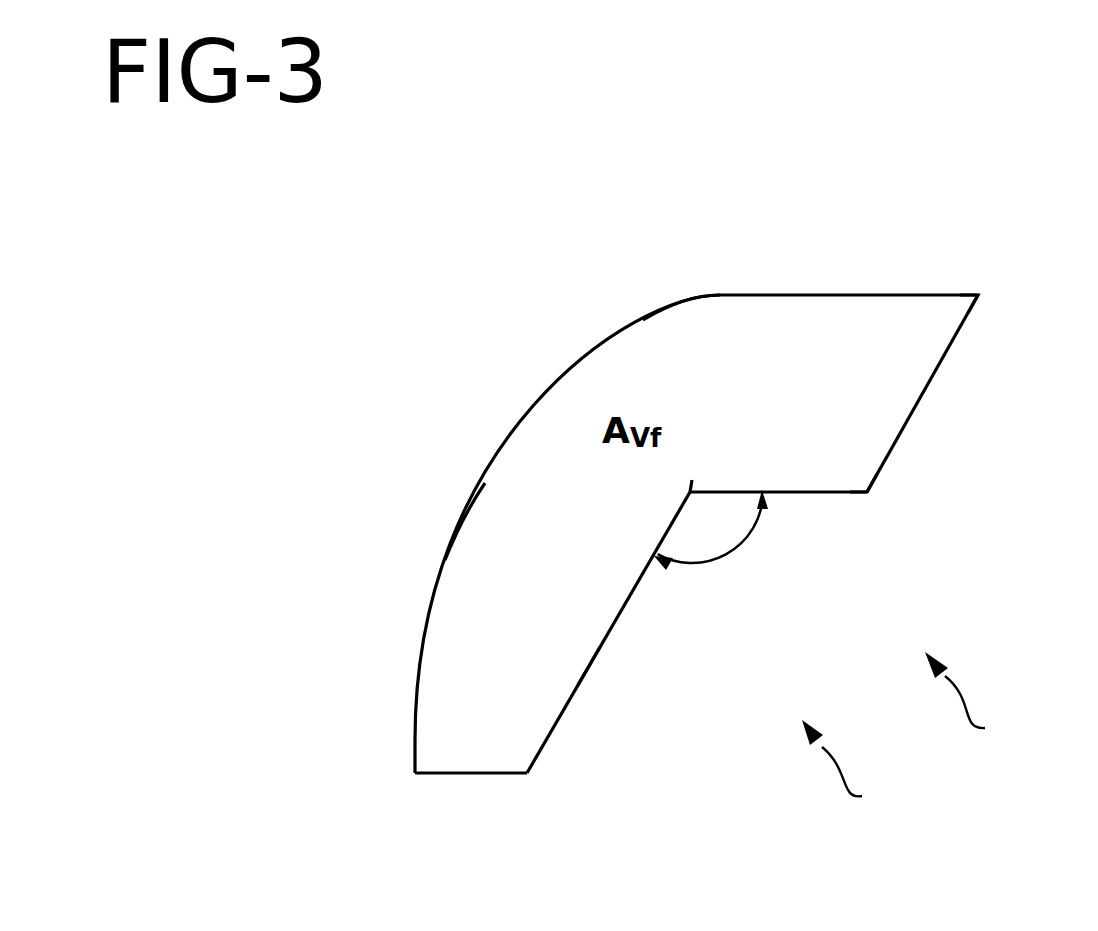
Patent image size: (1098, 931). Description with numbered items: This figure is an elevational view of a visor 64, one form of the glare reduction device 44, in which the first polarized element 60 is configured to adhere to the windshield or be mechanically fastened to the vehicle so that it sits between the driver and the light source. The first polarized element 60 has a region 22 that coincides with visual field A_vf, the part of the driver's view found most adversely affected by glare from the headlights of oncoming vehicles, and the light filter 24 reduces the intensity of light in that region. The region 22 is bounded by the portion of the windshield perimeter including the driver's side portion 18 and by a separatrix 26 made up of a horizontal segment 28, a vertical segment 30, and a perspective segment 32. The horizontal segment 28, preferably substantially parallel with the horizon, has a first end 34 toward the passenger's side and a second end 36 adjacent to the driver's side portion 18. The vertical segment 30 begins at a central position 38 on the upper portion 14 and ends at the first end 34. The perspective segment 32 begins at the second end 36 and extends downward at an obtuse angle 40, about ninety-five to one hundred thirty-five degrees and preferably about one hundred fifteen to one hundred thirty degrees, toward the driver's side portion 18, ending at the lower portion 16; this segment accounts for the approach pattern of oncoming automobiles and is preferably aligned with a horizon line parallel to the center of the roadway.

The upper portion 14 is at (868, 290).
The lower portion 16 is at (458, 773).
The driver's side portion 18 is at (517, 427).
The region 22 is at (527, 507).
The light filter 24 is at (645, 318).
The separatrix 26 is at (578, 678).
The horizontal segment 28 is at (803, 497).
The vertical segment 30 is at (928, 385).
The perspective segment 32 is at (548, 740).
The first end 34 is at (870, 493).
The second end 36 is at (692, 492).
The central position 38 is at (980, 287).
The obtuse angle 40 is at (722, 558).
The glare reduction device 44 is at (977, 699).
The first polarized element 60 is at (765, 322).
The visor 64 is at (853, 767).